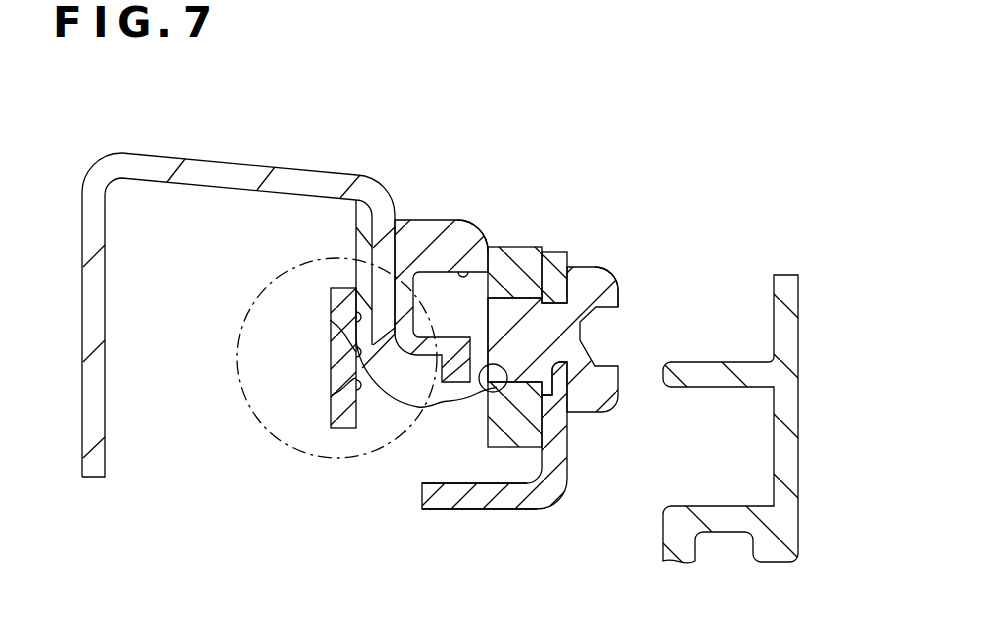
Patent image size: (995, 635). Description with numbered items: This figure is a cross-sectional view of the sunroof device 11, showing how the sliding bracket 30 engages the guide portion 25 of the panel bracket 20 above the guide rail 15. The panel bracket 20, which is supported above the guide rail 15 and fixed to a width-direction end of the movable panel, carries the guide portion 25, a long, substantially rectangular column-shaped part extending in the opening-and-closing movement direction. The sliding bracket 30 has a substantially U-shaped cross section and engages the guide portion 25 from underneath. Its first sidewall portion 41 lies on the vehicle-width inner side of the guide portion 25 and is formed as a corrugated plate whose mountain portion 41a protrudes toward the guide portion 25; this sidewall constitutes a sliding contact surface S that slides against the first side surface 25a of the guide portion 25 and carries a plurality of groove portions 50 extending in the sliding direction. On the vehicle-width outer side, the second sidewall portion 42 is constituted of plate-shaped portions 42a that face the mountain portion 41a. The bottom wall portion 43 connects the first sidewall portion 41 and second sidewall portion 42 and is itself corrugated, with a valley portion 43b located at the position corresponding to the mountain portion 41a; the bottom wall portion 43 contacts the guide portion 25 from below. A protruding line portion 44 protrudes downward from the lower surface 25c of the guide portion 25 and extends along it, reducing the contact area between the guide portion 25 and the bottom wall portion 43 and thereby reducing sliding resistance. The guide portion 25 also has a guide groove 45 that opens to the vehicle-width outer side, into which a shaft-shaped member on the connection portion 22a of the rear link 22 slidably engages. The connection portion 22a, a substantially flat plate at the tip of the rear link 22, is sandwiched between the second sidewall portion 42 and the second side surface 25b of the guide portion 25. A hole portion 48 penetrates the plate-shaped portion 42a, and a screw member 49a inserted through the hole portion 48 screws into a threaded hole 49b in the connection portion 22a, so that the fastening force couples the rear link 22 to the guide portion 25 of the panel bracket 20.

The sunroof device 11 is at (742, 106).
The guide rail 15 is at (786, 275).
The panel bracket 20 is at (235, 163).
The rear link 22 is at (536, 323).
The connection portion 22a is at (508, 247).
The guide portion 25 is at (407, 323).
The first side surface 25a is at (354, 270).
The second side surface 25b is at (427, 405).
The lower surface 25c is at (451, 417).
The sliding bracket 30 is at (556, 475).
The first sidewall portion 41 is at (309, 358).
The mountain portion 41a is at (331, 310).
The second sidewall portion 42 is at (556, 435).
The plate-shaped portion 42a is at (568, 445).
The bottom wall portion 43 is at (479, 524).
The valley portion 43b is at (450, 510).
The protruding line portion 44 is at (421, 408).
The guide groove 45 is at (463, 270).
The hole portion 48 is at (563, 339).
The screw member 49a is at (620, 294).
The threaded hole 49b is at (531, 300).
The groove portion 50 is at (355, 384).
The sliding contact surface S is at (365, 455).